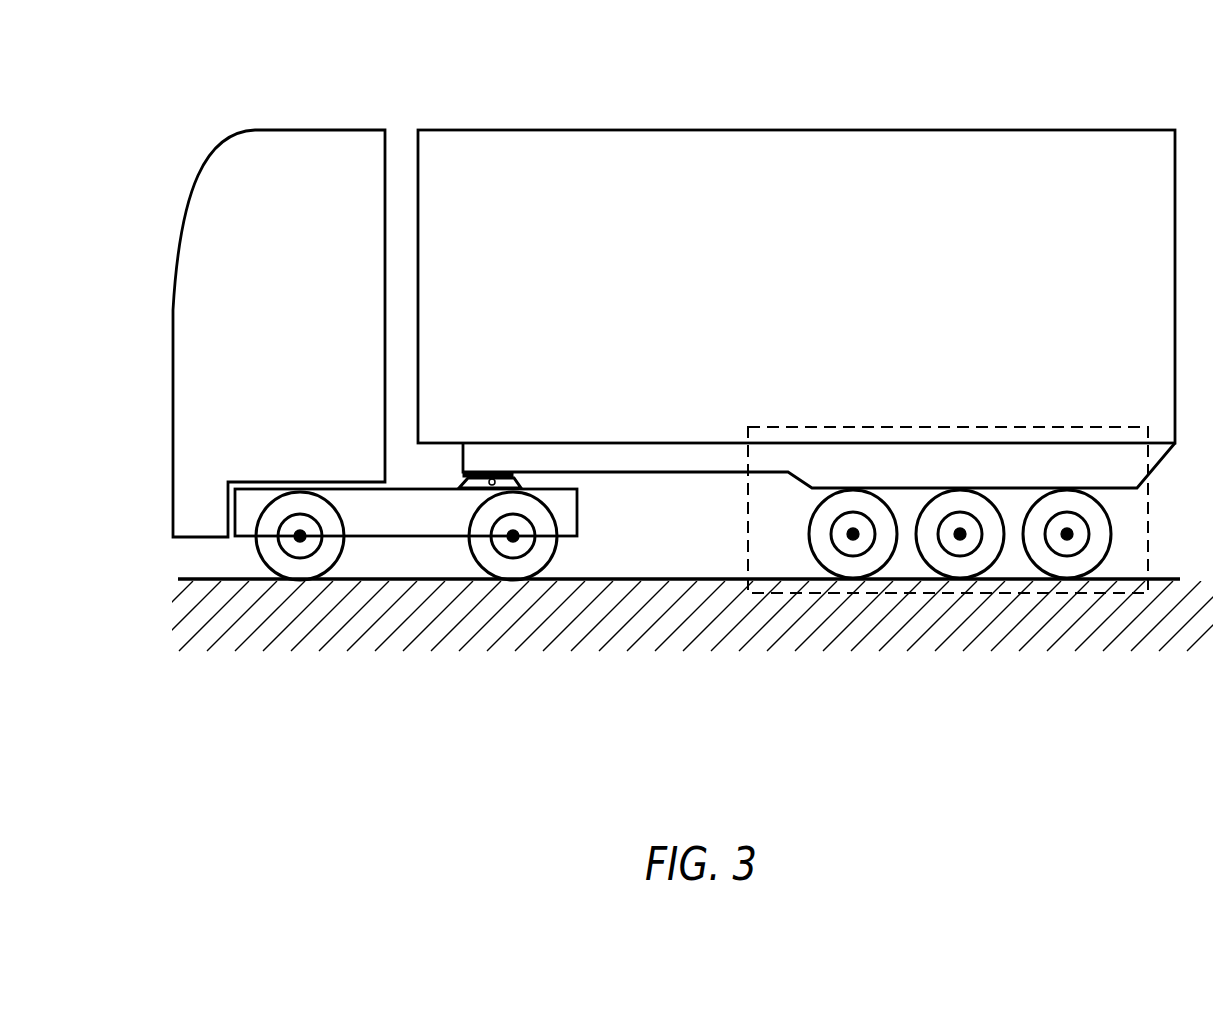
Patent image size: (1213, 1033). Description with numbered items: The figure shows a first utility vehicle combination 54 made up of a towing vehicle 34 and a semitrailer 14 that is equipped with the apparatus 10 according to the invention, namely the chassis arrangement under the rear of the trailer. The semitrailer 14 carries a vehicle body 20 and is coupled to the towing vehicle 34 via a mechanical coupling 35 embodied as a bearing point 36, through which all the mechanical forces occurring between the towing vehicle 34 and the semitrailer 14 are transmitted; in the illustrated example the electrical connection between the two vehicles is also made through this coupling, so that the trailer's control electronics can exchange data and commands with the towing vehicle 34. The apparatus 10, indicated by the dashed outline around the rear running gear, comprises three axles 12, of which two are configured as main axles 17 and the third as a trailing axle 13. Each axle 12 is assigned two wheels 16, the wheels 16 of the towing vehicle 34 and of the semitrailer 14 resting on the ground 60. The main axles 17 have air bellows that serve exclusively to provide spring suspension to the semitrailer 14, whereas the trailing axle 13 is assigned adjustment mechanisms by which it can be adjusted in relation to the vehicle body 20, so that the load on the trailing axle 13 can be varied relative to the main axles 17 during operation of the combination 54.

The apparatus 10 is at (887, 427).
The axles 12 is at (903, 615).
The trailing axle 13 is at (1064, 538).
The semitrailer 14 is at (796, 309).
The wheels 16 is at (303, 574).
The main axles 17 is at (850, 538).
The vehicle body 20 is at (857, 288).
The towing vehicle 34 is at (296, 288).
The mechanical coupling 35 is at (555, 448).
The bearing point 36 is at (493, 477).
The first utility vehicle combination 54 is at (257, 86).
The ground / road surface 60 is at (205, 582).